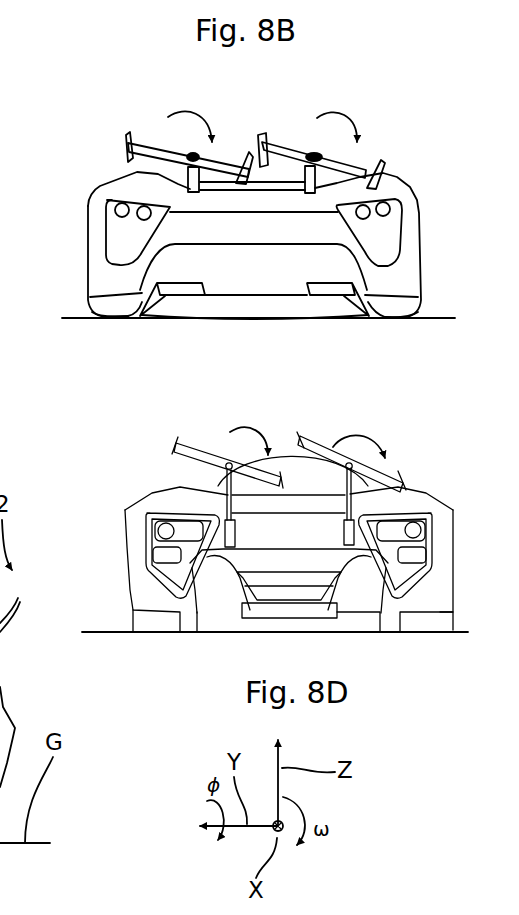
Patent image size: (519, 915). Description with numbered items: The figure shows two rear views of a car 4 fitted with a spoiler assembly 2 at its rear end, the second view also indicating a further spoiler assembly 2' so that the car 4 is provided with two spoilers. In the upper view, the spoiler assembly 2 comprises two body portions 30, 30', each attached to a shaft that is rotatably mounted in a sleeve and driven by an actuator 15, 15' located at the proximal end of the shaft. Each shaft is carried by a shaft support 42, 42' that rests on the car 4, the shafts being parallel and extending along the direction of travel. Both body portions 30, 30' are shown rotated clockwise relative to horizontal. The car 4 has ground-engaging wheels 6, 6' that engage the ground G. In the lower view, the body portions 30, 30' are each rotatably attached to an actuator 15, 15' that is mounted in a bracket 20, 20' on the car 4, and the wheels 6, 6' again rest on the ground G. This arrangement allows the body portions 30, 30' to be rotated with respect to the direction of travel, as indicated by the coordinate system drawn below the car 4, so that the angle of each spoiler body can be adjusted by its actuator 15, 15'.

In FIG. 8B, the spoiler assembly 2 is at (193, 132).
In FIG. 8D, the spoiler assembly 2 is at (227, 421).
In FIG. 8B, the spoiler assembly 2' is at (357, 137).
In FIG. 8D, the spoiler assembly 2' is at (388, 419).
In FIG. 8B, the car 4 is at (72, 213).
In FIG. 8D, the car 4 is at (96, 512).
In FIG. 8B, the ground-engaging wheel 6 is at (76, 296).
In FIG. 8D, the ground-engaging wheel 6 is at (100, 605).
In FIG. 8B, the ground-engaging wheel 6' is at (396, 352).
In FIG. 8D, the ground-engaging wheel 6' is at (439, 659).
In FIG. 8D, the actuator 15 is at (172, 467).
In FIG. 8D, the actuator 15' is at (381, 439).
In FIG. 8D, the bracket 20 is at (227, 569).
In FIG. 8D, the bracket 20' is at (370, 568).
In FIG. 8B, the body portion 30 is at (187, 128).
In FIG. 8D, the body portion 30 is at (227, 421).
In FIG. 8B, the body portion 30' is at (338, 130).
In FIG. 8D, the body portion 30' is at (388, 442).
In FIG. 8B, the shaft support 42 is at (226, 141).
In FIG. 8B, the shaft support 42' is at (380, 177).
In FIG. 8B, the ground G is at (428, 322).
In FIG. 8D, the ground G is at (108, 634).